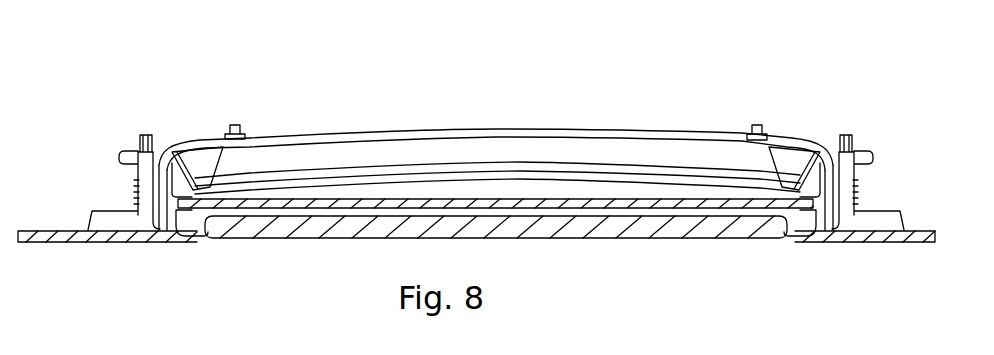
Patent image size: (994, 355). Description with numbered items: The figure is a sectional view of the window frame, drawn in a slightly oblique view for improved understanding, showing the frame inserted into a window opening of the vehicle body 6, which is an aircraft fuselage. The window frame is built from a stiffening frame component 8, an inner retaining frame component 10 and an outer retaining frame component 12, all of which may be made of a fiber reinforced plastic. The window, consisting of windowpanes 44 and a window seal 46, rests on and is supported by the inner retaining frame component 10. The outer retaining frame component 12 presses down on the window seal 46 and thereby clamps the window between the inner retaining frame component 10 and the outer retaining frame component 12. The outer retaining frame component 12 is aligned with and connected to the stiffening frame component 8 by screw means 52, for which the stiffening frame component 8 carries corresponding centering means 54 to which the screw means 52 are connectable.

The vehicle body 6 is at (48, 230).
The stiffening frame component 8 is at (863, 221).
The inner retaining frame component 10 is at (829, 222).
The outer retaining frame component 12 is at (595, 133).
The windowpanes 44 is at (665, 203).
The window seal 46 is at (180, 240).
The screw means 52 is at (240, 131).
The centering means 54 is at (830, 148).